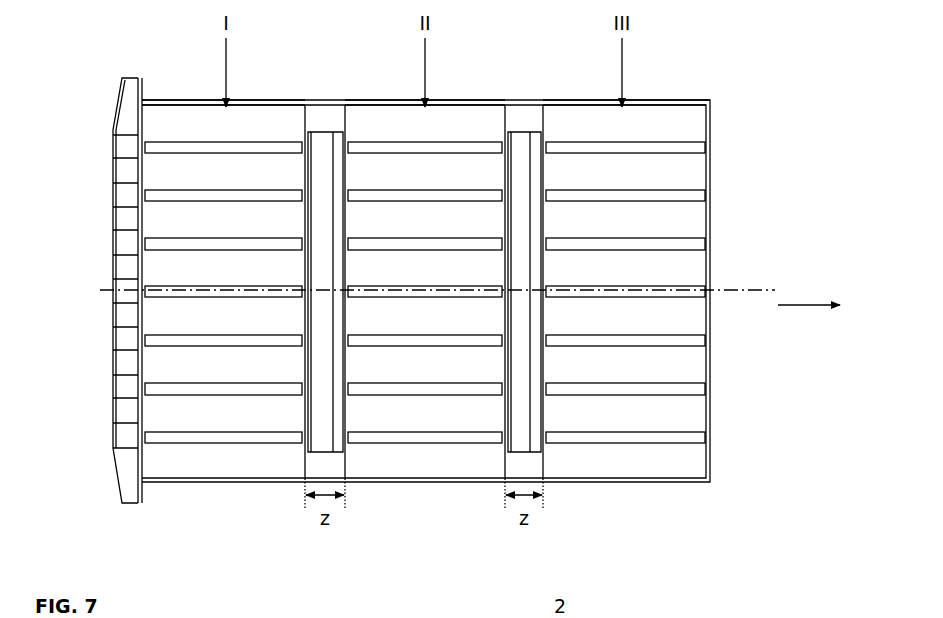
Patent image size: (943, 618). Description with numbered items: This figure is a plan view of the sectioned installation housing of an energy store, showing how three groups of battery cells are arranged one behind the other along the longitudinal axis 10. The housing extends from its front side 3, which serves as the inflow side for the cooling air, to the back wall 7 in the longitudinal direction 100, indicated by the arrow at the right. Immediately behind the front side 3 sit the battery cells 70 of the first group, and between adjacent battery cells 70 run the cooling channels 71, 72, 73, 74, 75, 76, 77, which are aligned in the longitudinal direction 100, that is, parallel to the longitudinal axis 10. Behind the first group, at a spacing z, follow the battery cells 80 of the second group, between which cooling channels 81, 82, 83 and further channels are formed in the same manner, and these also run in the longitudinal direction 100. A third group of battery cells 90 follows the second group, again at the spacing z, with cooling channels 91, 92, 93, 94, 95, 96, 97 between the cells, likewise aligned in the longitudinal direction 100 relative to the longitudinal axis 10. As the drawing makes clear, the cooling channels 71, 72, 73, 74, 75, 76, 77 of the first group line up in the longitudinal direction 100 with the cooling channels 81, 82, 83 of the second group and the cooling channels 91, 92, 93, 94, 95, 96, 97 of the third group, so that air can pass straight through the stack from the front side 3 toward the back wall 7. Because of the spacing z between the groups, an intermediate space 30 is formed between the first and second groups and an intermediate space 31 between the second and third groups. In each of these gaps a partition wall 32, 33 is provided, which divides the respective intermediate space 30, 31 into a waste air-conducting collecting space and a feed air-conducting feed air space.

The back wall 7 is at (710, 140).
The battery cells 70 is at (262, 112).
The battery cells 80 is at (456, 112).
The battery cells 90 is at (653, 112).
The front side 3 is at (113, 453).
The intermediate space 30 is at (310, 468).
The intermediate space 31 is at (515, 468).
The partition wall 32 is at (323, 432).
The partition wall 33 is at (523, 440).
The cooling channel 71 is at (198, 145).
The cooling channel 72 is at (155, 197).
The cooling channel 73 is at (155, 245).
The cooling channel 74 is at (152, 291).
The cooling channel 75 is at (152, 340).
The cooling channel 76 is at (153, 390).
The cooling channel 77 is at (153, 437).
The cooling channel 81 is at (365, 145).
The cooling channel 82 is at (410, 190).
The cooling channel 83 is at (470, 240).
The cooling channel 91 is at (565, 145).
The cooling channel 92 is at (597, 190).
The cooling channel 93 is at (675, 241).
The cooling channel 94 is at (690, 290).
The cooling channel 95 is at (698, 340).
The cooling channel 96 is at (698, 386).
The cooling channel 97 is at (698, 434).
The longitudinal axis 10 is at (771, 292).
The longitudinal direction 100 is at (796, 309).